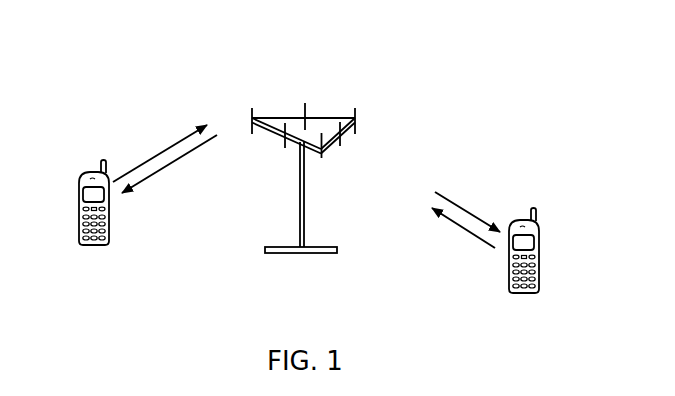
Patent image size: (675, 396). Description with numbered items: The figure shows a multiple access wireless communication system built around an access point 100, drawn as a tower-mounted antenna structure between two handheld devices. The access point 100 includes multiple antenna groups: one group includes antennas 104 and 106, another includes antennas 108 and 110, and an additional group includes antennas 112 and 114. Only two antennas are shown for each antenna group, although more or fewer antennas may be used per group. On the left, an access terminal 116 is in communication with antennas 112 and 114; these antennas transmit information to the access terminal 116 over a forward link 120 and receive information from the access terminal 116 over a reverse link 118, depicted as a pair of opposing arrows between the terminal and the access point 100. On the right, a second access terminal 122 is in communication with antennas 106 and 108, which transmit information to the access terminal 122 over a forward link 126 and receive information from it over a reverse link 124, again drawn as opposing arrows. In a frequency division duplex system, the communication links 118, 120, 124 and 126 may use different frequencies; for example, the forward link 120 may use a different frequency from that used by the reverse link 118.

The access point 100 is at (307, 253).
The antenna 104 is at (322, 158).
The antenna 106 is at (342, 143).
The antenna 108 is at (357, 130).
The antenna 110 is at (306, 105).
The antenna 112 is at (250, 111).
The antenna 114 is at (286, 144).
The access terminal 116 is at (79, 188).
The reverse link 118 is at (168, 147).
The forward link 120 is at (153, 177).
The access terminal 122 is at (538, 242).
The reverse link 124 is at (472, 233).
The forward link 126 is at (465, 210).